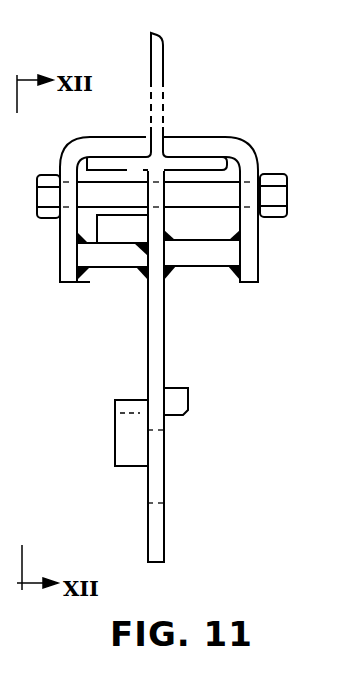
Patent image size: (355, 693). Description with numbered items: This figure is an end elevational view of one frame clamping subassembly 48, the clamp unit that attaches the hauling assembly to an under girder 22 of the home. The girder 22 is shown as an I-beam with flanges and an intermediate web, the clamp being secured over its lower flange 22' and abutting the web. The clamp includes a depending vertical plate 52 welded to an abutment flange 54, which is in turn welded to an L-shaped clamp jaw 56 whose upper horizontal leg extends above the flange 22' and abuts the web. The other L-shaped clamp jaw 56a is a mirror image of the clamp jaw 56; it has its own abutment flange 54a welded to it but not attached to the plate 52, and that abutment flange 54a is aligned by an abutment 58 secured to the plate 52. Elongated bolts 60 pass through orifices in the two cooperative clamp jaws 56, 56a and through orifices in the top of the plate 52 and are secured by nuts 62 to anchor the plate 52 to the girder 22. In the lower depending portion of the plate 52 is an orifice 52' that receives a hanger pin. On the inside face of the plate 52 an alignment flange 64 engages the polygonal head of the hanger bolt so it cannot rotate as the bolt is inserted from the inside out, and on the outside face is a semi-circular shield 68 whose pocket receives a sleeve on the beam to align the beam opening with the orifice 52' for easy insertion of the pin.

The under girder 22 is at (175, 92).
The frame clamping subassembly 48 is at (198, 111).
The flange of girder 22' is at (174, 131).
The elongated bolt 60 is at (44, 178).
The nut 62 is at (273, 178).
The L-shaped clamp jaw 56 is at (250, 248).
The L-shaped clamp jaw 56a is at (68, 233).
The abutment 58 is at (122, 224).
The abutment flange 54 is at (203, 260).
The abutment flange 54a is at (112, 262).
The depending vertical plate 52 is at (188, 366).
The orifice 52' is at (189, 461).
The semi-circular shield 68 is at (122, 399).
The alignment flange 64 is at (188, 392).